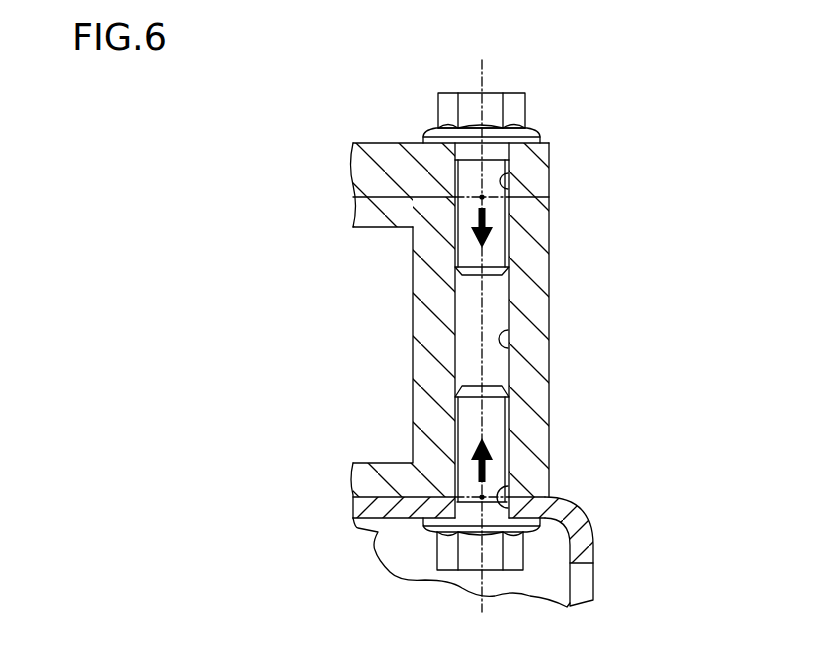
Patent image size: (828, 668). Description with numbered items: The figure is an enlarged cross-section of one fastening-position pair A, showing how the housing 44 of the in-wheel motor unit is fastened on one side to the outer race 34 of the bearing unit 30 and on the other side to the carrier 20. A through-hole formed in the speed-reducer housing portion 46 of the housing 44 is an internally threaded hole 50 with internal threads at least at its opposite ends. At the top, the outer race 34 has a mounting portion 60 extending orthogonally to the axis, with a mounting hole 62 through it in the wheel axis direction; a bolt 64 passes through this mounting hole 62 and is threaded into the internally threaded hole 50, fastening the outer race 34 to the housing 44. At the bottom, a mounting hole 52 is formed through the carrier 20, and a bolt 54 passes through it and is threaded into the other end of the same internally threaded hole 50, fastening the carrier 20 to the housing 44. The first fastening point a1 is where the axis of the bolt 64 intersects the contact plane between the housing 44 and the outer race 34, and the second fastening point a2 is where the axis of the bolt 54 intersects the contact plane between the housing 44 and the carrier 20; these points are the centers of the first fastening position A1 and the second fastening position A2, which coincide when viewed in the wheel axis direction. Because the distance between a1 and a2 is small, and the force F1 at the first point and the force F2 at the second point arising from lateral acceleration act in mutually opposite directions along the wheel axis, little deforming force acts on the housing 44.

The carrier 20 is at (378, 530).
The bearing unit 30 is at (448, 141).
The outer race 34 is at (378, 130).
The housing 44 is at (517, 326).
The speed-reducer housing portion 46 is at (565, 253).
The internally threaded hole 50 is at (507, 352).
The mounting hole 52 is at (498, 497).
The bolt 54 is at (448, 558).
The mounting portion 60 is at (540, 157).
The mounting hole 62 is at (507, 187).
The bolt 64 is at (514, 98).
The fastening-position pair A is at (532, 48).
The first fastening position A1 is at (536, 118).
The second fastening position A2 is at (540, 550).
The first fastening point a1 is at (477, 186).
The second fastening point a2 is at (487, 512).
The force F1 is at (477, 237).
The force F2 is at (477, 446).